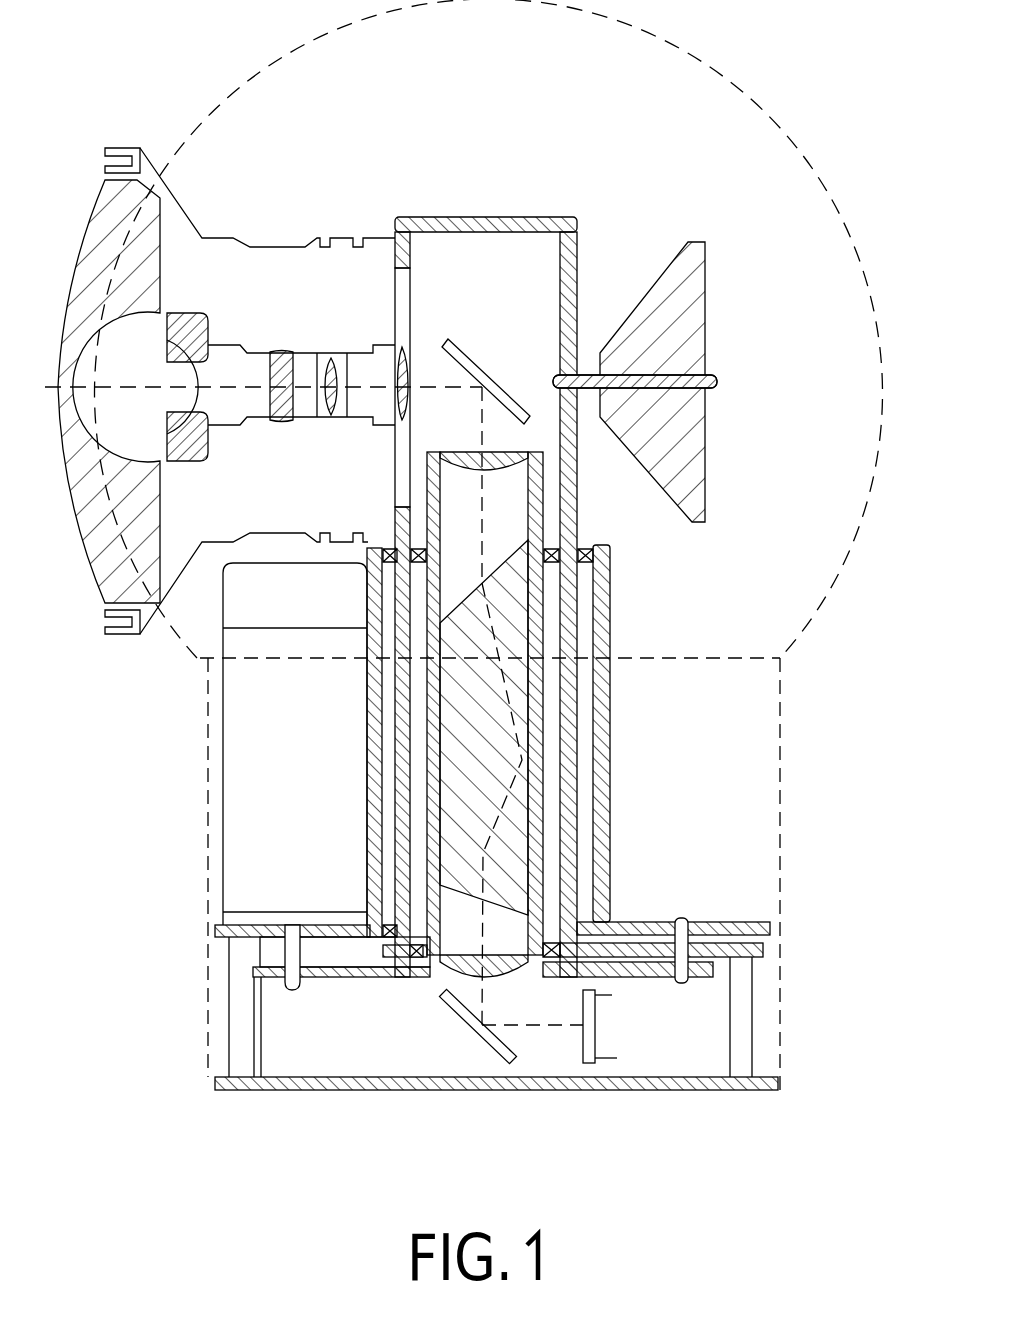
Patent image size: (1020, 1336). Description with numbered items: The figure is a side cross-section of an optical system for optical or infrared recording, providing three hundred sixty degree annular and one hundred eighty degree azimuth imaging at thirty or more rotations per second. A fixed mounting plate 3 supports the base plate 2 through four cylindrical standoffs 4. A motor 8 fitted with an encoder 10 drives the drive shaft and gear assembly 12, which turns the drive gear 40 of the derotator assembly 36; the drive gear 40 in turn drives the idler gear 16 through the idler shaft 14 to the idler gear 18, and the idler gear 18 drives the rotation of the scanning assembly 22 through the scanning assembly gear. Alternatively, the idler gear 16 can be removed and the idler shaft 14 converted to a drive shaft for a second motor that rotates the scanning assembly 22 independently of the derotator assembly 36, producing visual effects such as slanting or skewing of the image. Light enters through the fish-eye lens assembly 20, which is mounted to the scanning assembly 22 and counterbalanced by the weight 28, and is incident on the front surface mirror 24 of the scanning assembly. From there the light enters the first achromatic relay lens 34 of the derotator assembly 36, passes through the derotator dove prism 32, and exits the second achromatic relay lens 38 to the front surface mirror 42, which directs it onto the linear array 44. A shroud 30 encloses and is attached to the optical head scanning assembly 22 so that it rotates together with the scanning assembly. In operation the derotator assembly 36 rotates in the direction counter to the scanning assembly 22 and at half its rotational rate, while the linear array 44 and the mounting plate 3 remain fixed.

The base plate 2 is at (215, 928).
The mounting plate 3 is at (268, 1090).
The cylindrical standoffs 4 is at (235, 1040).
The motor 8 is at (240, 797).
The encoder 10 is at (242, 608).
The drive shaft and gear assembly 12 is at (253, 970).
The idler shaft 14 is at (680, 918).
The idler gear 16 is at (717, 970).
The idler gear 18 is at (770, 950).
The fish-eye lens assembly 20 is at (220, 238).
The scanning assembly 22 is at (405, 217).
The front surface mirror 24 is at (473, 363).
The weight 28 is at (708, 330).
The shroud 30 is at (806, 160).
The derotator dove prism 32 is at (455, 727).
The first achromatic relay lens 34 is at (513, 443).
The derotator assembly 36 is at (545, 602).
The second achromatic relay lens 38 is at (467, 953).
The drive gear 40 is at (407, 980).
The front surface mirror 42 is at (463, 1067).
The linear array 44 is at (597, 1040).